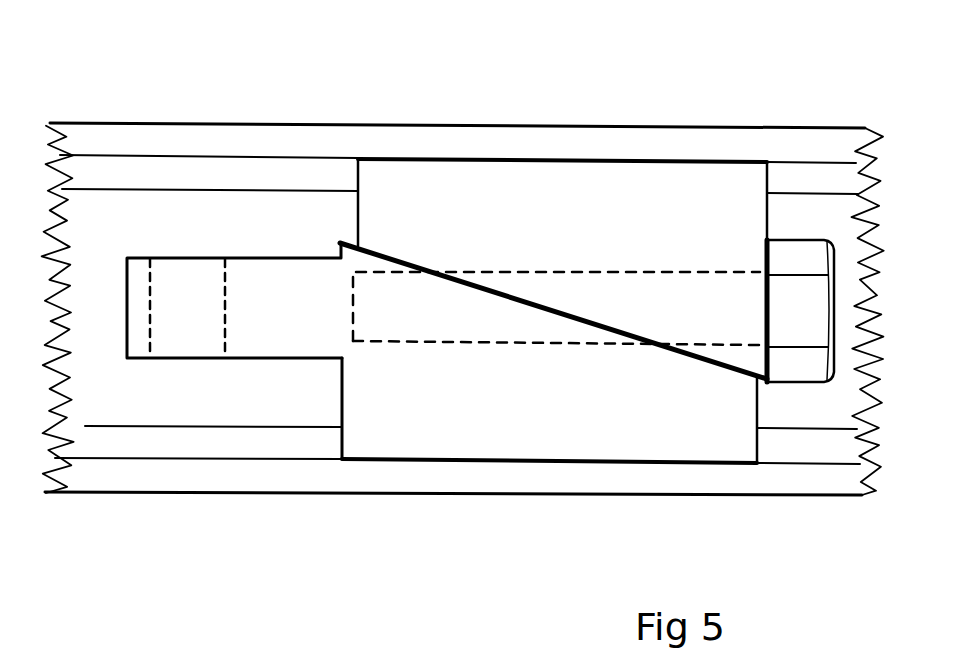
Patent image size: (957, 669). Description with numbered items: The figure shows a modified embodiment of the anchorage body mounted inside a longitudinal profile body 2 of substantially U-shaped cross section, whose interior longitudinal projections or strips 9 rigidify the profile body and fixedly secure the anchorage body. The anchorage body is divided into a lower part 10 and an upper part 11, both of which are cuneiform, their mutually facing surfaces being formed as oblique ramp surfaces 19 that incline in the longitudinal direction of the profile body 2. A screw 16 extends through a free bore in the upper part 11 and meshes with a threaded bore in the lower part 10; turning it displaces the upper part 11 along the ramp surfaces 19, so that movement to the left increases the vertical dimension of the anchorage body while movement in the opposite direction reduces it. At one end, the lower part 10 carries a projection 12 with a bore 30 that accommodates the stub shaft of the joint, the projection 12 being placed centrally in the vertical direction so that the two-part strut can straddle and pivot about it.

The longitudinal profile body 2 is at (125, 137).
The interior longitudinal projections or strips 9 is at (212, 170).
The lower part of the anchorage body 10 is at (487, 428).
The upper part of the anchorage body 11 is at (567, 180).
The projection 12 is at (274, 272).
The screw 16 is at (790, 293).
The oblique ramp surfaces 19 is at (396, 257).
The bore 30 is at (170, 337).